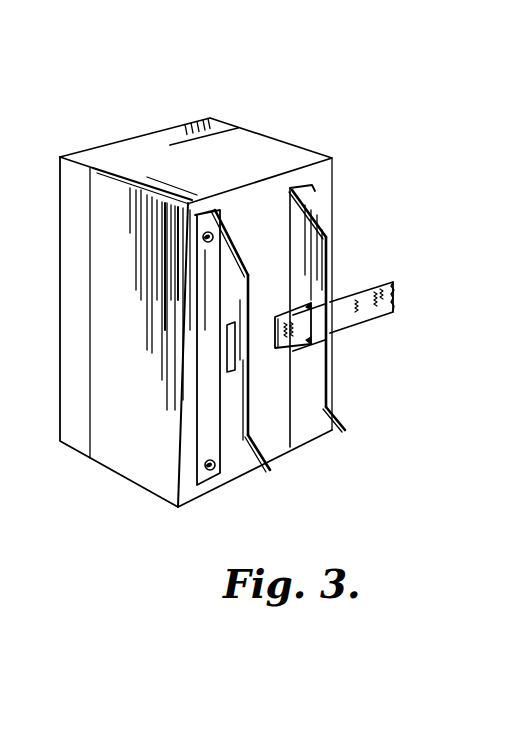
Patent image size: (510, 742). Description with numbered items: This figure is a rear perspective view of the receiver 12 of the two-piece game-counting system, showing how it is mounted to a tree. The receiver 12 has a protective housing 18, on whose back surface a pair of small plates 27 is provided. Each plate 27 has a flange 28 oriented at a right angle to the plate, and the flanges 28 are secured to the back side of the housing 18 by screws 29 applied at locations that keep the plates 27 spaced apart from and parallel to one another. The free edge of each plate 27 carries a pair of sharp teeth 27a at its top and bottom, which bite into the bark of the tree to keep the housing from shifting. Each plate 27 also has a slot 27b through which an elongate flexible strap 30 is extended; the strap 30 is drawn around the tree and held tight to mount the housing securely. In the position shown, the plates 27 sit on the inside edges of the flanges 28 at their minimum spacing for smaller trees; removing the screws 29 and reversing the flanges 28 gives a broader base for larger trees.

The receiver 12 is at (233, 79).
The protective housing 18 is at (115, 452).
The plate 27 is at (305, 393).
The sharp teeth 27a is at (266, 262).
The slot 27b is at (227, 358).
The flange 28 is at (207, 297).
The screws 29 is at (205, 230).
The elongate flexible strap 30 is at (391, 281).